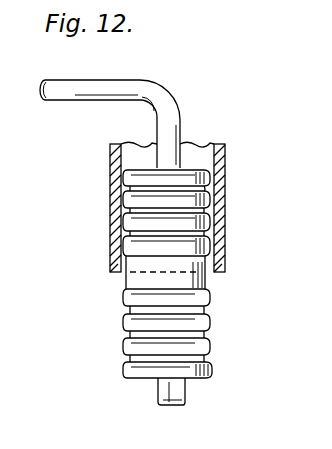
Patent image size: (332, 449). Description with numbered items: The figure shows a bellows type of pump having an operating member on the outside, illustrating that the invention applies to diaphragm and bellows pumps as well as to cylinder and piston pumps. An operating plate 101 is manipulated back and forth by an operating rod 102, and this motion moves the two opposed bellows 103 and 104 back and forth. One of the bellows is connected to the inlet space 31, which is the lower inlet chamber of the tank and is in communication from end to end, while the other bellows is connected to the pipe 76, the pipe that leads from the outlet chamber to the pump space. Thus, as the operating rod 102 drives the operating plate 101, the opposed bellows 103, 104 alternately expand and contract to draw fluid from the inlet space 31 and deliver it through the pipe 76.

The inlet chamber 31 is at (160, 404).
The pipe 76 is at (57, 67).
The operating plate 101 is at (153, 271).
The operating rod 102 is at (217, 190).
The bellows 103 is at (211, 333).
The bellows 104 is at (177, 165).